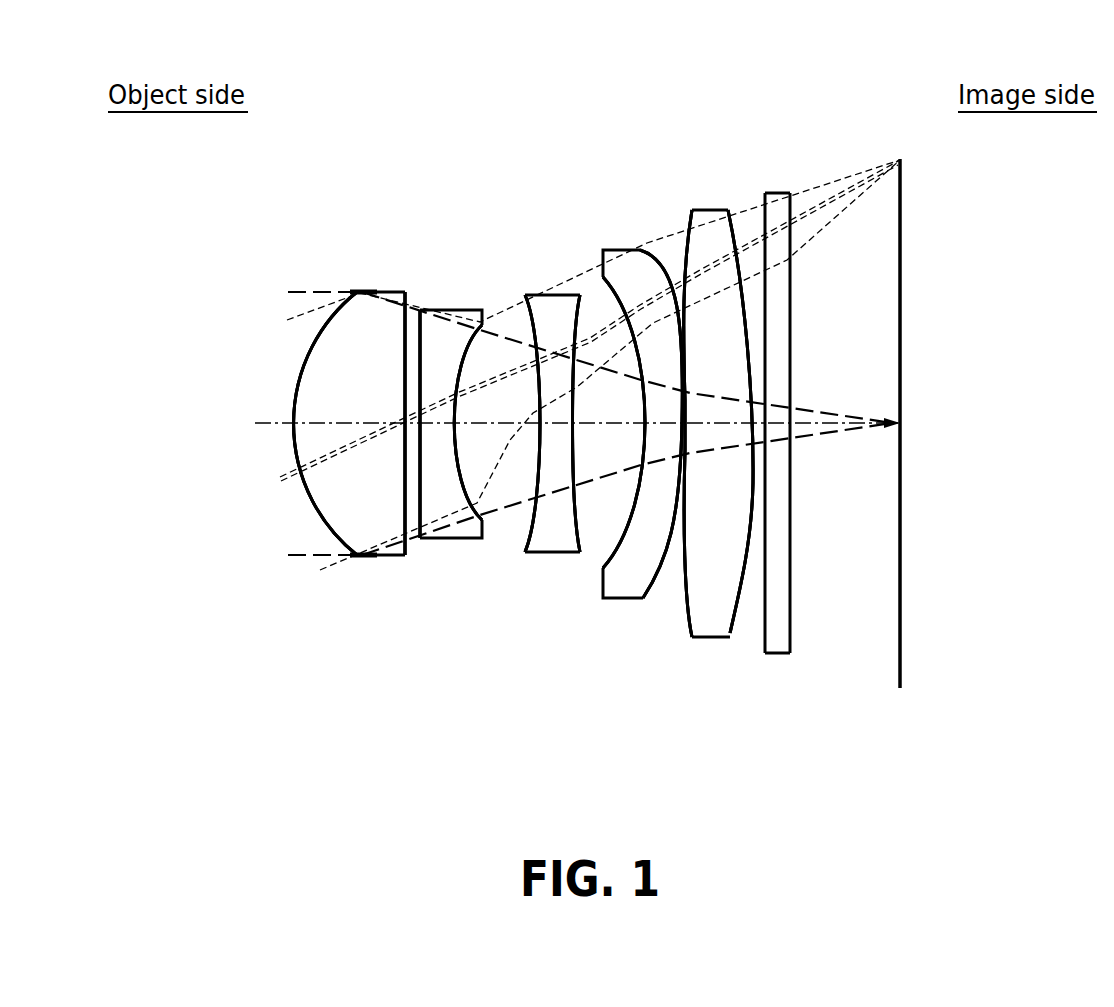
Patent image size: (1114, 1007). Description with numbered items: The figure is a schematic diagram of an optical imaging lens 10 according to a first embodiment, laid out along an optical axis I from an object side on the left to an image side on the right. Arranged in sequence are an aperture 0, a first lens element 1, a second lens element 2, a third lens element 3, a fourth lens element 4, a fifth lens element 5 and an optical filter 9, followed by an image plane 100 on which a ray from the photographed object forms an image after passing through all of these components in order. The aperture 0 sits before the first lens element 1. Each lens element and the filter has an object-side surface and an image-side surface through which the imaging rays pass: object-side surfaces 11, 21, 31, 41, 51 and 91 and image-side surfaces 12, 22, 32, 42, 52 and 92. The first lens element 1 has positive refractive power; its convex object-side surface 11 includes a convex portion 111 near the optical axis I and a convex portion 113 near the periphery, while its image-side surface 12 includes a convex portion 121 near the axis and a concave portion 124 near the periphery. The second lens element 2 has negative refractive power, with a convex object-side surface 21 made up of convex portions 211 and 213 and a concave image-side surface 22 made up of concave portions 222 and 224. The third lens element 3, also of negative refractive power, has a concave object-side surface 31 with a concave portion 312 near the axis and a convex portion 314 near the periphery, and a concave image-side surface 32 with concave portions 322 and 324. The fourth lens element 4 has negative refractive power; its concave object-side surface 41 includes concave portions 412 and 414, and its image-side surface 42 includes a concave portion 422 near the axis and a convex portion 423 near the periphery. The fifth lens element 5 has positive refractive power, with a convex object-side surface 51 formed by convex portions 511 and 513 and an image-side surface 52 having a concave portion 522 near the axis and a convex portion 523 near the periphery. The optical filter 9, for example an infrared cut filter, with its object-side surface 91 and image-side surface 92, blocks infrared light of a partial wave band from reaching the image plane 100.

The optical imaging lens 10 is at (990, 760).
The aperture 0 is at (364, 292).
The first lens element 1 is at (388, 292).
The object-side surface of the first lens element 11 is at (331, 320).
The image-side surface of the first lens element 12 is at (407, 320).
The convex portion in the vicinity of the optical axis 111 is at (296, 432).
The convex portion in the vicinity of a periphery 113 is at (341, 528).
The convex portion in the vicinity of the optical axis 121 is at (405, 432).
The concave portion in the vicinity of a periphery 124 is at (405, 530).
The second lens element 2 is at (450, 310).
The object-side surface of the second lens element 21 is at (419, 325).
The image-side surface of the second lens element 22 is at (479, 330).
The convex portion in the vicinity of the optical axis 211 is at (419, 432).
The convex portion in the vicinity of a periphery 213 is at (420, 515).
The concave portion in the vicinity of the optical axis 222 is at (457, 425).
The concave portion in the vicinity of a periphery 224 is at (478, 505).
The third lens element 3 is at (540, 295).
The object-side surface of the third lens element 31 is at (524, 313).
The image-side surface of the third lens element 32 is at (581, 300).
The concave portion in the vicinity of the optical axis 312 is at (532, 515).
The convex portion in the vicinity of a periphery 314 is at (524, 552).
The concave portion in the vicinity of the optical axis 322 is at (577, 433).
The concave portion in the vicinity of a periphery 324 is at (580, 530).
The fourth lens element 4 is at (622, 250).
The object-side surface of the fourth lens element 41 is at (603, 268).
The image-side surface of the fourth lens element 42 is at (660, 262).
The concave portion in the vicinity of the optical axis 412 is at (640, 413).
The concave portion in the vicinity of a periphery 414 is at (625, 545).
The concave portion in the vicinity of the optical axis 422 is at (680, 417).
The convex portion in the vicinity of a periphery 423 is at (668, 575).
The fifth lens element 5 is at (712, 210).
The object-side surface of the fifth lens element 51 is at (689, 220).
The image-side surface of the fifth lens element 52 is at (737, 220).
The convex portion in the vicinity of the optical axis 511 is at (686, 433).
The convex portion in the vicinity of a periphery 513 is at (690, 247).
The concave portion in the vicinity of the optical axis 522 is at (750, 407).
The convex portion in the vicinity of a periphery 523 is at (737, 262).
The optical filter 9 is at (778, 194).
The object-side surface of the optical filter 91 is at (764, 212).
The image-side surface of the optical filter 92 is at (791, 202).
The image plane 100 is at (902, 656).
The optical axis I is at (270, 423).